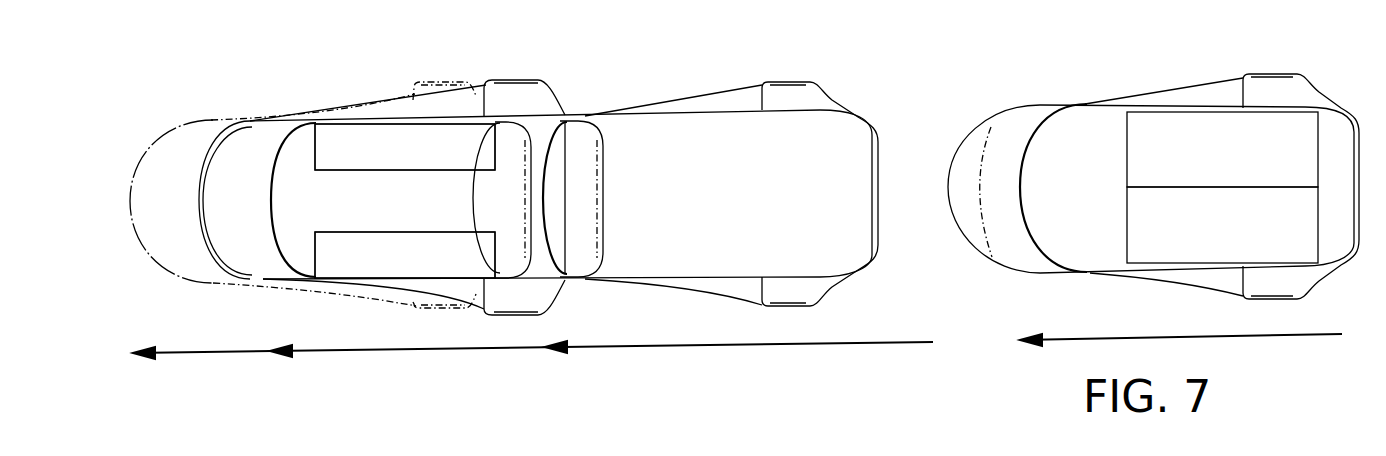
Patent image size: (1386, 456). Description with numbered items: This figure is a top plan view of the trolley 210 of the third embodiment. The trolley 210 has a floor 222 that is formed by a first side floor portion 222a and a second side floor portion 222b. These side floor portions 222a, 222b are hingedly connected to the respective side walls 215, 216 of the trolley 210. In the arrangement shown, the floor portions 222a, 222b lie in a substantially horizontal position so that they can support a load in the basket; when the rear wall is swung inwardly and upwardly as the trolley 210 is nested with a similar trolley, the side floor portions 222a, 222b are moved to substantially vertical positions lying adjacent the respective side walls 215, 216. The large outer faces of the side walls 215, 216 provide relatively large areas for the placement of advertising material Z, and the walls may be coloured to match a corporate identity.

The trolley 210 is at (980, 97).
The side wall 215 is at (725, 104).
The side wall 216 is at (728, 290).
The floor 222 is at (341, 258).
The first side floor portion 222a is at (441, 160).
The second side floor portion 222b is at (441, 267).
The advertising material Z is at (972, 213).